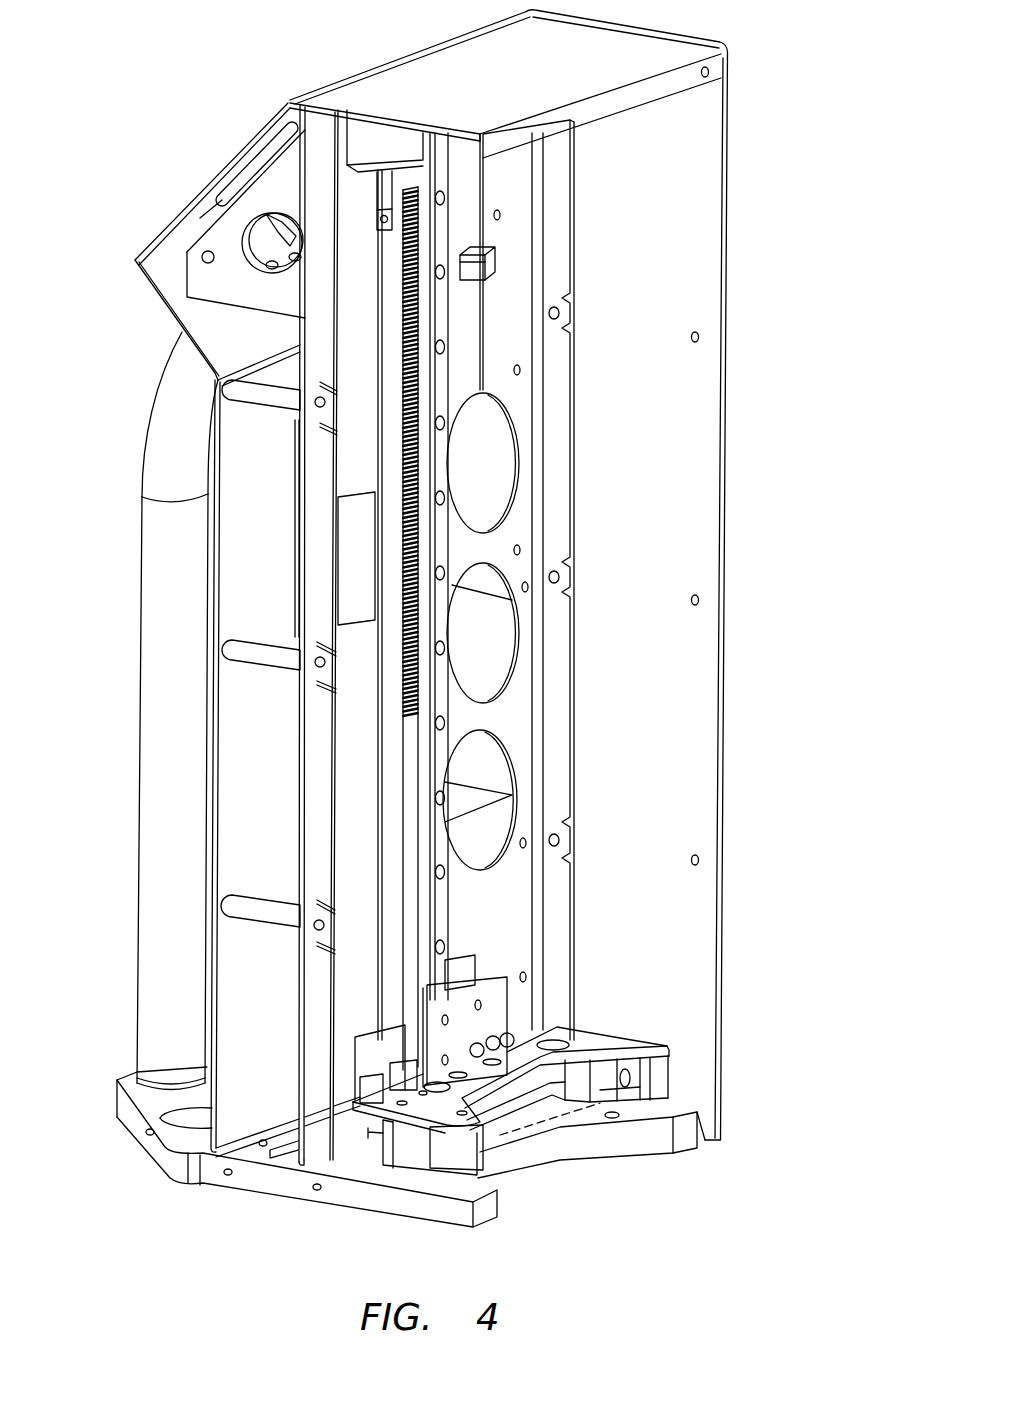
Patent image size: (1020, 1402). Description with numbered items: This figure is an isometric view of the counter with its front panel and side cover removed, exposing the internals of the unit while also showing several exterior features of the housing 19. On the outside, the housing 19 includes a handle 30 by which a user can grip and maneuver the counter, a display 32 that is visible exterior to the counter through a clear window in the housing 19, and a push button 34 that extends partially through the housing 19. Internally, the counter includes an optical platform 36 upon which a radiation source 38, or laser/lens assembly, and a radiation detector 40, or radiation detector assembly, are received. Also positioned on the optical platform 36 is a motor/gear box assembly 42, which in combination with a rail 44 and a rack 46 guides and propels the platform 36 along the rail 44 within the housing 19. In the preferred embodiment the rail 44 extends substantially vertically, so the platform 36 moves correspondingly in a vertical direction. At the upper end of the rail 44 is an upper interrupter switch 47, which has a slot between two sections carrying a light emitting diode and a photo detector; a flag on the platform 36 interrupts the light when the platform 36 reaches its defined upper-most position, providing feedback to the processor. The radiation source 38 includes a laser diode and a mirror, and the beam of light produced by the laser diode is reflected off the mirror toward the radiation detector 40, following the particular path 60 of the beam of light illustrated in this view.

The housing 19 is at (705, 148).
The handle 30 is at (155, 613).
The display 32 is at (272, 153).
The push button 34 is at (250, 223).
The optical platform 36 is at (595, 1035).
The radiation source 38 is at (600, 1090).
The radiation detector 40 is at (410, 1150).
The motor/gear box assembly 42 is at (490, 1103).
The rail 44 is at (437, 910).
The rack 46 is at (390, 726).
The upper interrupter switch 47 is at (493, 265).
The path of the beam of light 60 is at (517, 1130).